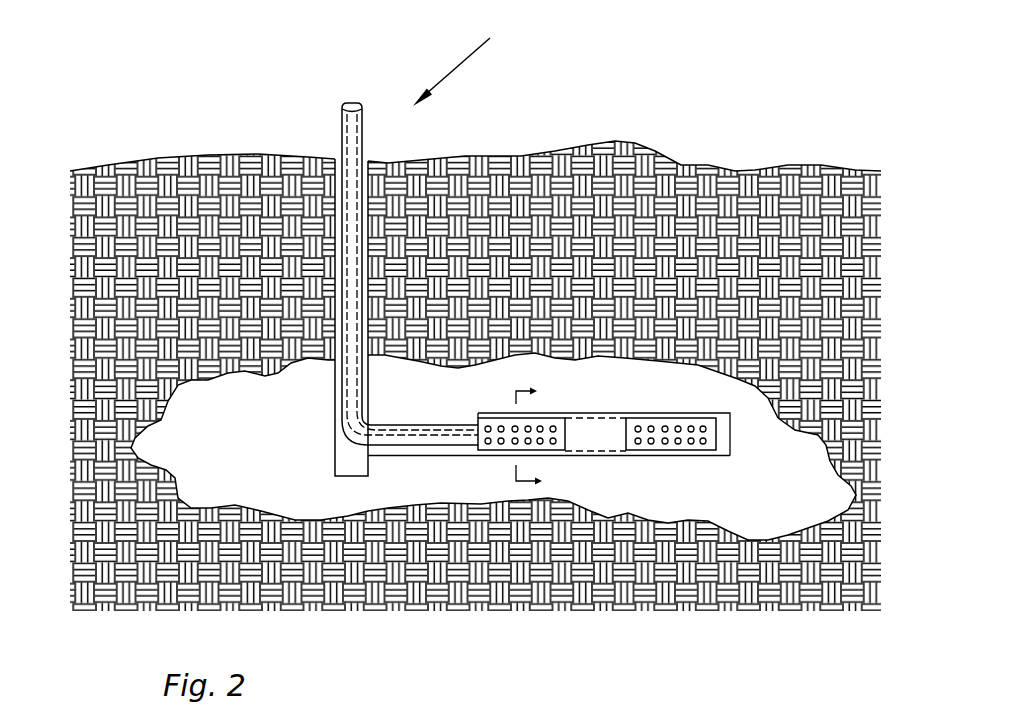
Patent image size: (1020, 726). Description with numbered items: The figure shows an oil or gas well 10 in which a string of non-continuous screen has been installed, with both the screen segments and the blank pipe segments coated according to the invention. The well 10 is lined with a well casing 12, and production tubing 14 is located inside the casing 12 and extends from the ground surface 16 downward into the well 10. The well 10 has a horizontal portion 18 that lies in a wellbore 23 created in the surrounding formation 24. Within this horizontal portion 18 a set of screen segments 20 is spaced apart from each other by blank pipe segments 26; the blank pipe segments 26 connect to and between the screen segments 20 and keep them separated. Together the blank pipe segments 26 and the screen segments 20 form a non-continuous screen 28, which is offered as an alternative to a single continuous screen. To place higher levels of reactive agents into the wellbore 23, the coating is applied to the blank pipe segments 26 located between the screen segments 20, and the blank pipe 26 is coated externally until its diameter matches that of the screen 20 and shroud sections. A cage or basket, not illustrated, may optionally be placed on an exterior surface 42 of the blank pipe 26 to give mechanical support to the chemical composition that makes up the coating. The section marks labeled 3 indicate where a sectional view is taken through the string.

The oil or gas well 10 is at (472, 57).
The well casing 12 is at (327, 428).
The production tubing 14 is at (336, 94).
The ground surface 16 is at (468, 147).
The horizontal portion 18 is at (567, 495).
The screen segments 20 is at (532, 420).
The wellbore 23 is at (577, 405).
The formation 24 is at (770, 478).
The blank pipe segments 26 is at (600, 418).
The non-continuous screen 28 is at (697, 408).
The exterior surface 42 is at (595, 435).
The section line 3- 3 is at (517, 432).